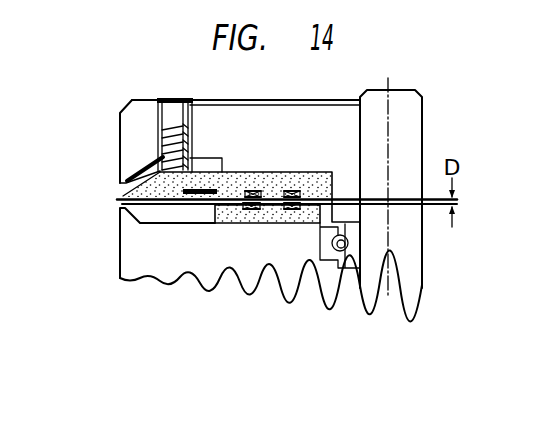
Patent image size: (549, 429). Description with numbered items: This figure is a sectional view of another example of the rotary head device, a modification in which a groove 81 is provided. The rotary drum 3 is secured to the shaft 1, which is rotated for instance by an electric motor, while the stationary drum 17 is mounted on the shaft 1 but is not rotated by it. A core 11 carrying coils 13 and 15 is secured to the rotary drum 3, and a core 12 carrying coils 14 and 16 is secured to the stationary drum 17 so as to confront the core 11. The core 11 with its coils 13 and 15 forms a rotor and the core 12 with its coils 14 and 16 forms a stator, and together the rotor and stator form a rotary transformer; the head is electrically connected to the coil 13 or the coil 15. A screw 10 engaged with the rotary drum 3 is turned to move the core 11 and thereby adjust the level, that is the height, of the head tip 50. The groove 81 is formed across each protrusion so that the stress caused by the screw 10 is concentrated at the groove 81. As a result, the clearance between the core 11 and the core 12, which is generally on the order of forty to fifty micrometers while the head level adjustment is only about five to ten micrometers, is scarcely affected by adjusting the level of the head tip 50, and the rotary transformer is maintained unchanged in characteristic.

The shaft 1 is at (406, 98).
The rotary drum 3 is at (142, 110).
The screw 10 is at (177, 110).
The core 11 is at (277, 177).
The core 12 is at (270, 214).
The coil 13 is at (251, 189).
The coil 14 is at (246, 210).
The coil 15 is at (298, 189).
The coil 16 is at (297, 210).
The stationary drum 17 is at (122, 247).
The head tip 50 is at (113, 200).
The groove 81 is at (202, 187).